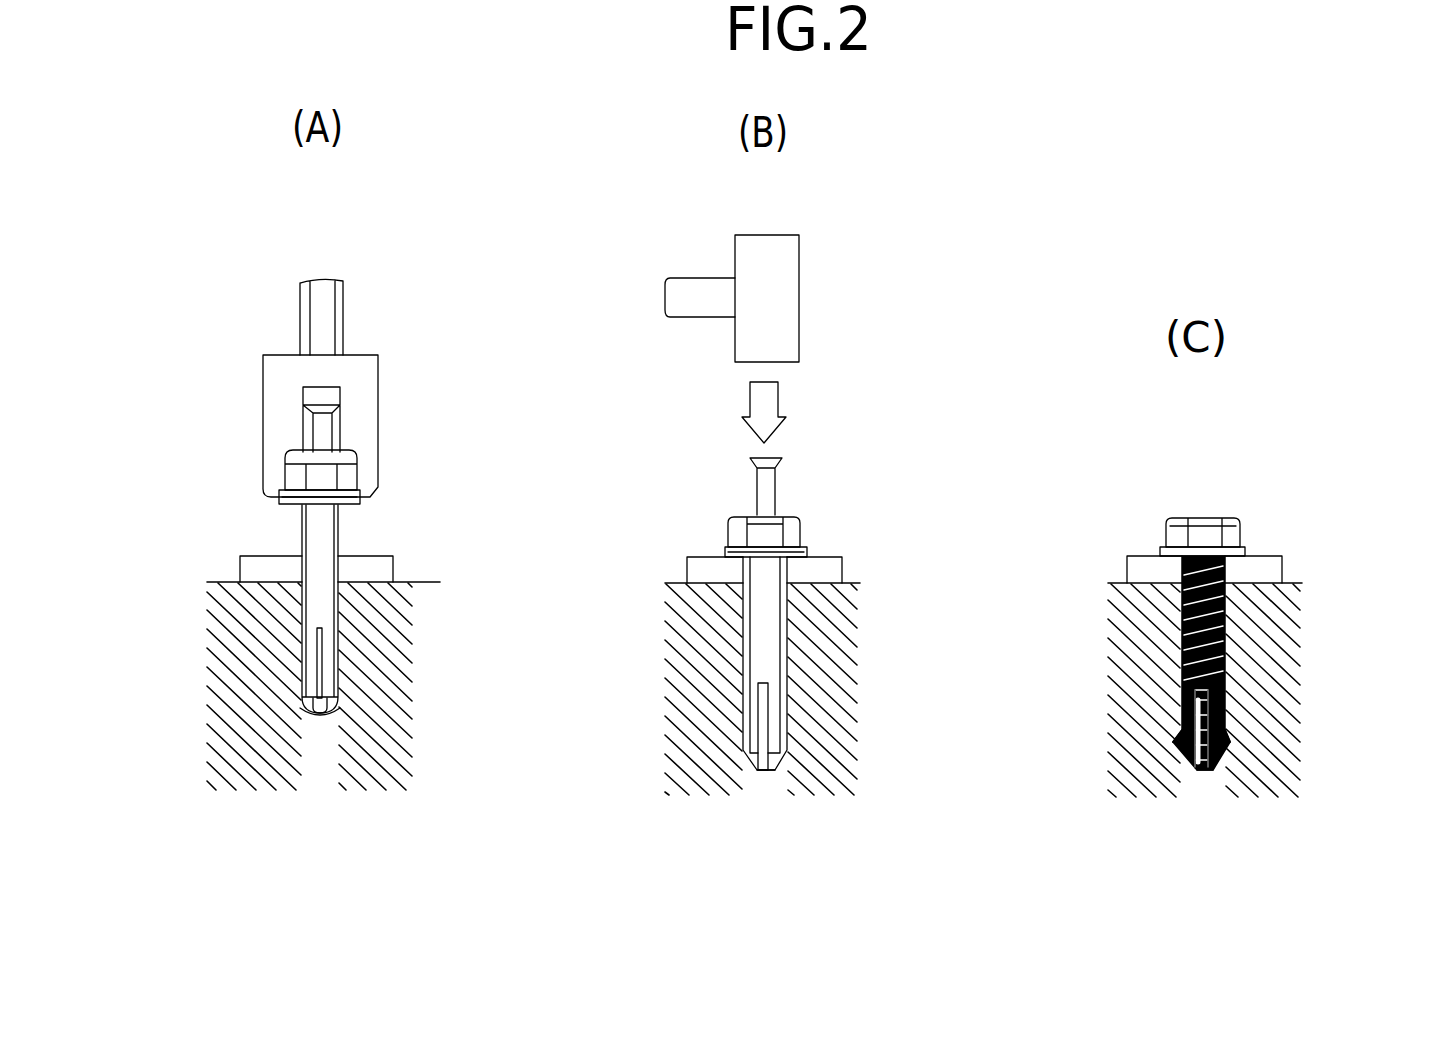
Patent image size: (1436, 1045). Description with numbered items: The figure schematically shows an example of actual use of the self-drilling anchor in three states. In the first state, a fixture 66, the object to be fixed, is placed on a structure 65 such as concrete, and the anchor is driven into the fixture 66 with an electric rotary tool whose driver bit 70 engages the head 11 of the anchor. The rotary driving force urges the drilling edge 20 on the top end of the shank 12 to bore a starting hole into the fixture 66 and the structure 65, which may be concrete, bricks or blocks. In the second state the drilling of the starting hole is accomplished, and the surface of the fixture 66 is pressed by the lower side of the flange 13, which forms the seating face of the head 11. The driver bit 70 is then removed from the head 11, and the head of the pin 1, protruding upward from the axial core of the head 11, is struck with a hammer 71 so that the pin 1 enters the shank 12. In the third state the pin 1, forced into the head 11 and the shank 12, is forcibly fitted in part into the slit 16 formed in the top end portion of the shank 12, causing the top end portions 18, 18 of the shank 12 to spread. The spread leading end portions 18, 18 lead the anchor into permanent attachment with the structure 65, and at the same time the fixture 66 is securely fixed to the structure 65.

The pin 1 is at (324, 433).
The head 11 is at (287, 468).
The shank 12 is at (322, 555).
The flange 13 is at (300, 505).
The slit 16 is at (340, 678).
The top end portions 18 is at (1172, 737).
The drilling edge 20 is at (318, 715).
The structure 65 is at (380, 628).
The fixture 66 is at (377, 563).
The driver bit 70 is at (283, 392).
The hammer 71 is at (780, 253).